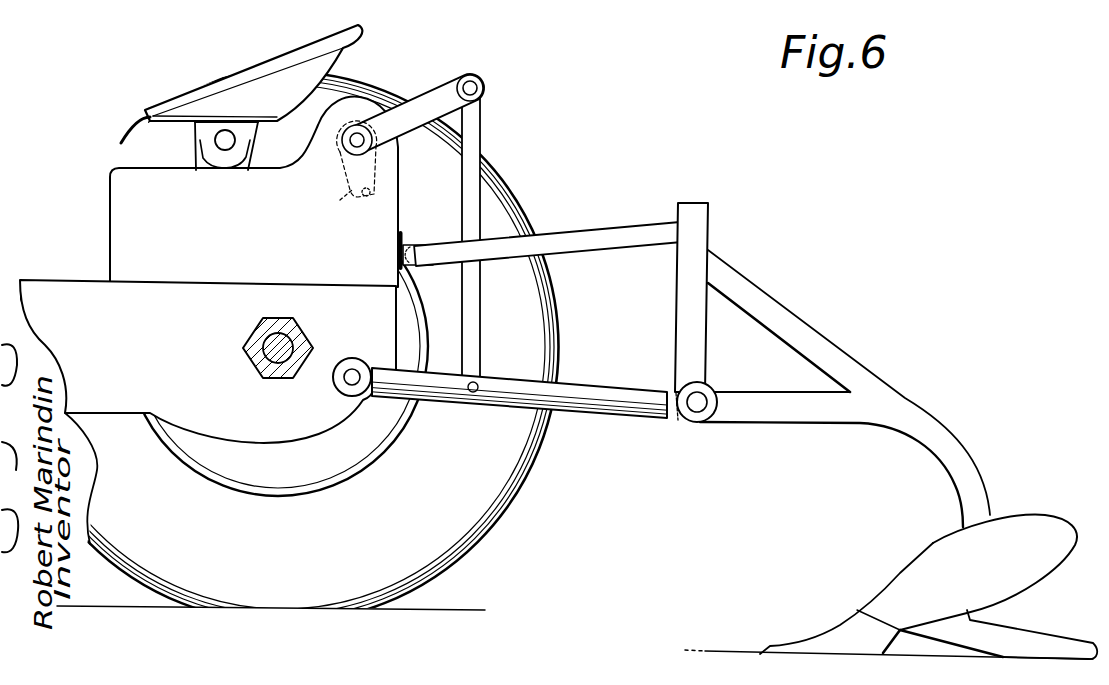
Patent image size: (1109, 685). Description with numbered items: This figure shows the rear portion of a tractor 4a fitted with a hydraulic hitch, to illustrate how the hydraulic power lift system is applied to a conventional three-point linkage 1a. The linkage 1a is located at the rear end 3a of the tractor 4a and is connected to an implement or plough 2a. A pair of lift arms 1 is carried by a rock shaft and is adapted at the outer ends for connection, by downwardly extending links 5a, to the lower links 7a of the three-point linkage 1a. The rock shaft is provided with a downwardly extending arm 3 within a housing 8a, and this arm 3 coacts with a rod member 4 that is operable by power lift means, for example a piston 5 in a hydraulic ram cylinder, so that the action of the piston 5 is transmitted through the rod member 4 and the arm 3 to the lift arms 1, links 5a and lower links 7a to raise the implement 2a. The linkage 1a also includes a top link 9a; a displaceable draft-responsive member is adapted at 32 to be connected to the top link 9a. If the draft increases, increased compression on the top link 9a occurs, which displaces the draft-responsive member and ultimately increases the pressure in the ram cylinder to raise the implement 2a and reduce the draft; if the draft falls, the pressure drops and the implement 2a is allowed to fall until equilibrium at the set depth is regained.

The lift arm 1 is at (440, 88).
The downwardly extending arm 3 is at (373, 170).
The rod member 4 is at (340, 200).
The piston 5 is at (358, 196).
The downwardly extending link 5a is at (479, 203).
The top link 9a is at (616, 198).
The connection point 32 is at (410, 250).
The housing 8a is at (276, 227).
The tractor 4a is at (56, 280).
The lower link 7a is at (600, 392).
The three-point linkage 1a is at (633, 430).
The rear end 3a is at (343, 433).
The implement or plough 2a is at (900, 566).